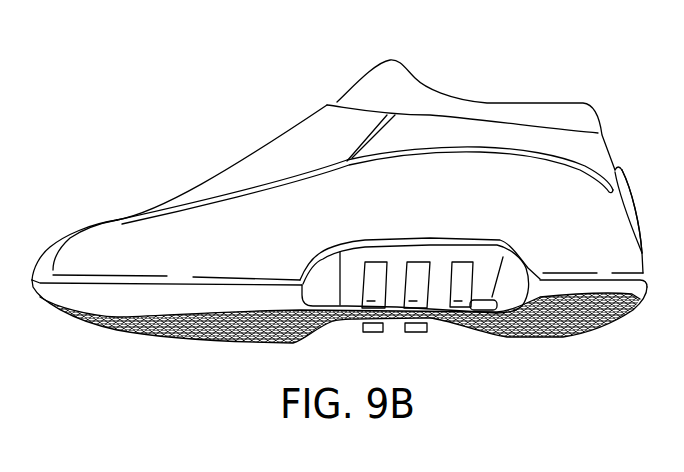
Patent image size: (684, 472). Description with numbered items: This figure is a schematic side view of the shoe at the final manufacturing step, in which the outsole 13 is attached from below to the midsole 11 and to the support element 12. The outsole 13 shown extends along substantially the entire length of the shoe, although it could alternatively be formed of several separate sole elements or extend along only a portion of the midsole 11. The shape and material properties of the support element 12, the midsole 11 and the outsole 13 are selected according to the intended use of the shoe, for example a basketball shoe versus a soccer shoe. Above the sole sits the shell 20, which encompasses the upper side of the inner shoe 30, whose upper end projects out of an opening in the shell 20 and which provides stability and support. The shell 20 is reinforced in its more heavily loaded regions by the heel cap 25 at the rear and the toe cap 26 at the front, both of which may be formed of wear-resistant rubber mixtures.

The midsole 11 is at (206, 293).
The support element 12 is at (435, 282).
The outsole 13 is at (553, 318).
The shell 20 is at (343, 192).
The heel cap 25 is at (628, 198).
The toe cap 26 is at (83, 230).
The inner shoe 30 is at (365, 90).